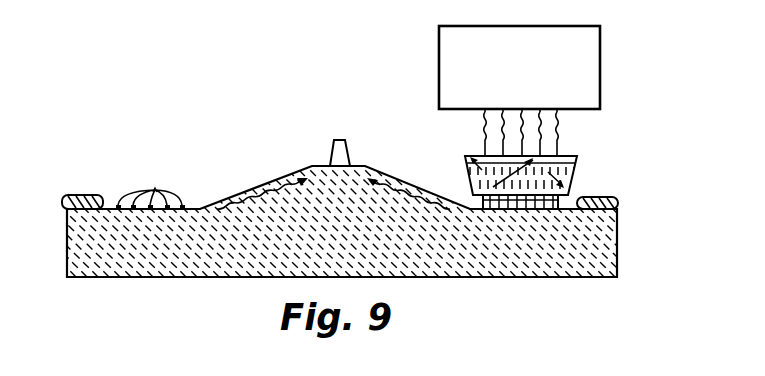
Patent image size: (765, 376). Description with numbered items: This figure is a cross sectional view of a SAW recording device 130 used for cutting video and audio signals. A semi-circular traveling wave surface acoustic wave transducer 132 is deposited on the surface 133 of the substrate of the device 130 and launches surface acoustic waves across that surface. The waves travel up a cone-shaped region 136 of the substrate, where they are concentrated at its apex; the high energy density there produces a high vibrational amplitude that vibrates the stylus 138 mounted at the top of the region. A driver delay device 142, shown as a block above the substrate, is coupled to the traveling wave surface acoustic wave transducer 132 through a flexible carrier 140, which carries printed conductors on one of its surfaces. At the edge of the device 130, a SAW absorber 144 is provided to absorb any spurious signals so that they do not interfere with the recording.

The SAW recording device 130 is at (310, 108).
The traveling wave surface acoustic wave transducer 132 is at (155, 189).
The surface 133 is at (400, 177).
The cone-shaped region 136 is at (247, 193).
The stylus 138 is at (350, 162).
The flexible carrier 140 is at (573, 180).
The driver delay device 142 is at (601, 72).
The SAW absorber 144 is at (68, 197).